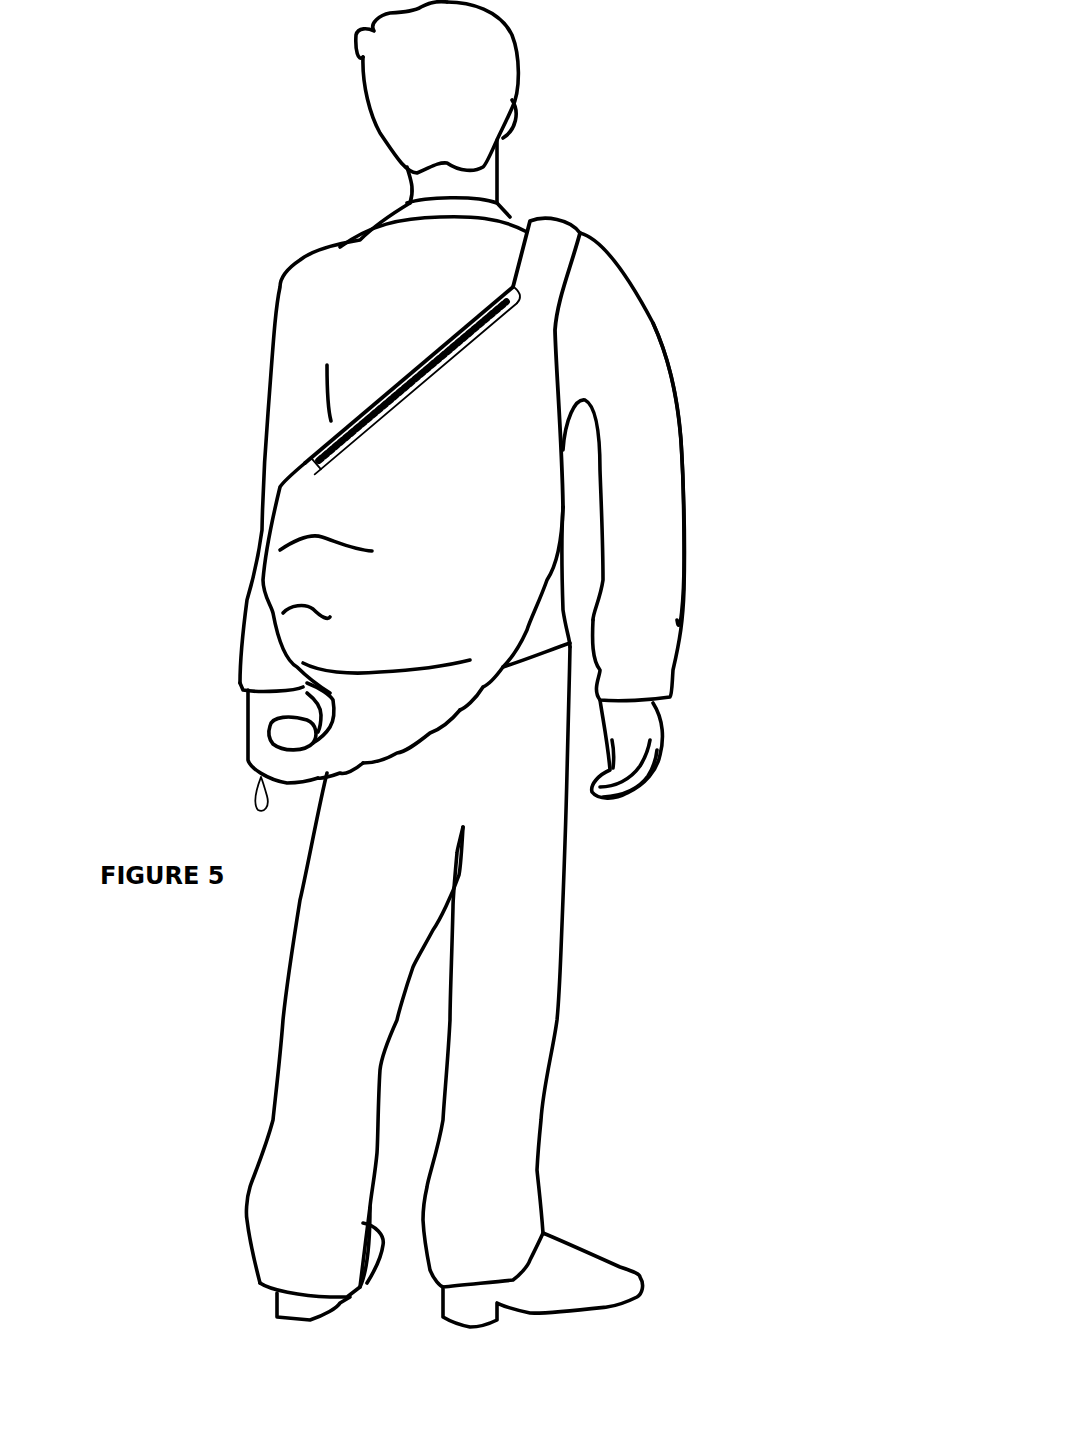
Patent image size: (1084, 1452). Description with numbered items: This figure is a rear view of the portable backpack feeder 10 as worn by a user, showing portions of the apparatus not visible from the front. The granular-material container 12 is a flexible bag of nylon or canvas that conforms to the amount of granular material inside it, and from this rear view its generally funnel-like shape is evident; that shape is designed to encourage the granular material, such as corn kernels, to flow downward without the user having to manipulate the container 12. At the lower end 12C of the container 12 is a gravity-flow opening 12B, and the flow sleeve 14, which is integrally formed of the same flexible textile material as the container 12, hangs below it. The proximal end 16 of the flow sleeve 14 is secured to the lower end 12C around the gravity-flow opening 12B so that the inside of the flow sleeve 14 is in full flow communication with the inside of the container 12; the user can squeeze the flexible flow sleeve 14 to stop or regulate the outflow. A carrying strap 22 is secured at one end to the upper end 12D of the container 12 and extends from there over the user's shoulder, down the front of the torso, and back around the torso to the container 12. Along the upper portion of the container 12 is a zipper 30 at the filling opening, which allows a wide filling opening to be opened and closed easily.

The portable backpack feeder 10 is at (293, 500).
The granular-material container 12 is at (480, 500).
The gravity-flow opening 12B is at (277, 737).
The lower end of container 12C is at (303, 650).
The upper end of container 12D is at (480, 305).
The flow sleeve 14 is at (343, 758).
The proximal end of flow sleeve 16 is at (467, 673).
The carrying strap 22 is at (553, 260).
The zipper 30 is at (457, 357).